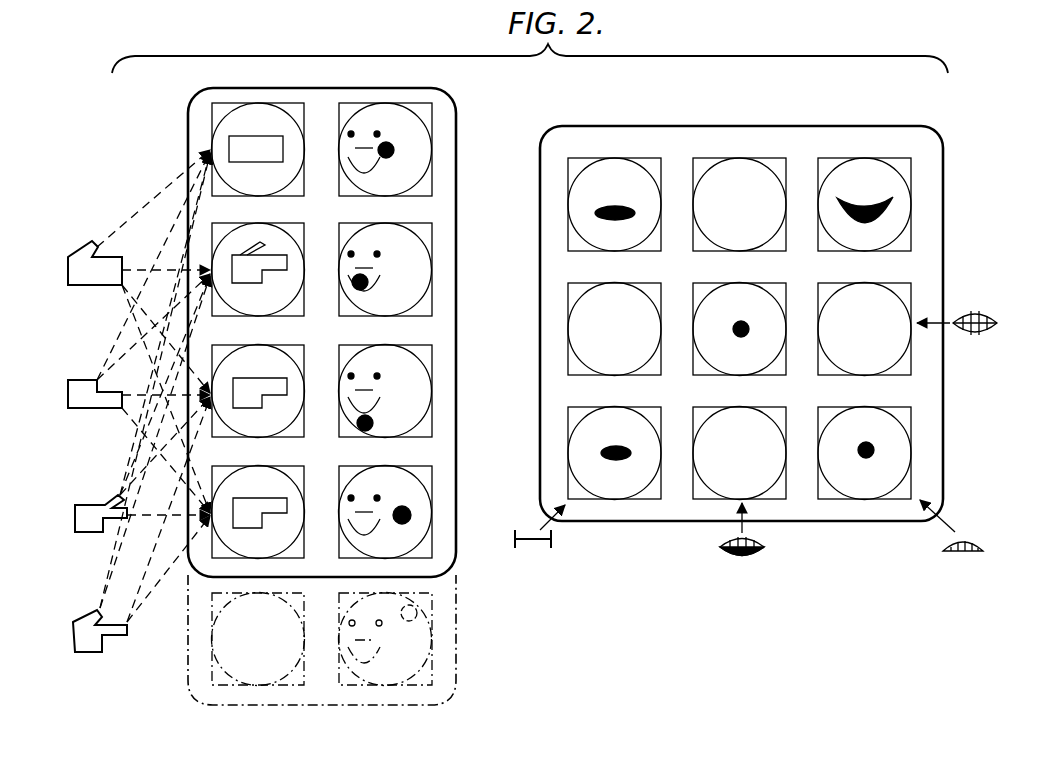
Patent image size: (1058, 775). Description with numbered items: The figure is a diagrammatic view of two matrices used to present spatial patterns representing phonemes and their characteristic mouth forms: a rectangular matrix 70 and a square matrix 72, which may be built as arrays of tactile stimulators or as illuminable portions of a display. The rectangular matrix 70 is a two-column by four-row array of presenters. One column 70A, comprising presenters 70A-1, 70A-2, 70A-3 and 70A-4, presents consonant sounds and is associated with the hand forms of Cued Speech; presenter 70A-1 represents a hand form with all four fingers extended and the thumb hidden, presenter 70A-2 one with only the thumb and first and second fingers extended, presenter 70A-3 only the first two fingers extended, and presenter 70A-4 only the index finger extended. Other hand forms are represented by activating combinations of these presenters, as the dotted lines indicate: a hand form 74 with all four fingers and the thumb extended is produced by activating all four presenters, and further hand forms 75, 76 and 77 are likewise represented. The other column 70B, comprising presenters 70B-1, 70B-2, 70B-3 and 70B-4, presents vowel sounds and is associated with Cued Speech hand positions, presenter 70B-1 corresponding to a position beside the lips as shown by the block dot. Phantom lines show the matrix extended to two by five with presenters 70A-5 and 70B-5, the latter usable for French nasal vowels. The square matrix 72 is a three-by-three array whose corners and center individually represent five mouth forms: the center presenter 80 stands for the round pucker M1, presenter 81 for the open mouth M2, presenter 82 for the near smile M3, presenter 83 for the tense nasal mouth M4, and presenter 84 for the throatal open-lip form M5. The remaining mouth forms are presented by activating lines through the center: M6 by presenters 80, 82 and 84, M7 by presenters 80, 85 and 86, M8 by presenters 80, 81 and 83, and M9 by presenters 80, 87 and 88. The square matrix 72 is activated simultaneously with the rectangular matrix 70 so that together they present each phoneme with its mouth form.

The rectangular matrix 70 is at (176, 103).
The column of rectangular matrix 70A is at (257, 88).
The other column of rectangular matrix 70B is at (384, 90).
The presenter 70A-1 is at (212, 148).
The presenter 70A-2 is at (298, 307).
The presenter 70A-3 is at (298, 430).
The presenter 70A-4 is at (214, 556).
The presenter 70A-5 is at (262, 677).
The presenter 70B-1 is at (418, 145).
The presenter 70B-2 is at (418, 272).
The presenter 70B-3 is at (420, 395).
The presenter 70B-4 is at (425, 510).
The presenter 70B-5 is at (418, 667).
The square matrix 72 is at (578, 108).
The hand form 74 is at (72, 255).
The hand form 75 is at (85, 380).
The hand form 76 is at (96, 532).
The hand form 77 is at (88, 652).
The center presenter 80 is at (778, 295).
The presenter 81 is at (887, 420).
The presenter 82 is at (858, 165).
The presenter 83 is at (578, 165).
The presenter 84 is at (622, 490).
The presenter 85 is at (722, 172).
The presenter 86 is at (782, 490).
The presenter 87 is at (903, 362).
The presenter 88 is at (570, 325).
The mouth form M1 is at (745, 322).
The mouth form M2 is at (868, 458).
The mouth form M3 is at (873, 197).
The mouth form M4 is at (620, 205).
The mouth form M5 is at (622, 446).
The mouth form M6 is at (528, 547).
The mouth form M7 is at (742, 560).
The mouth form M8 is at (963, 556).
The mouth form M9 is at (973, 312).